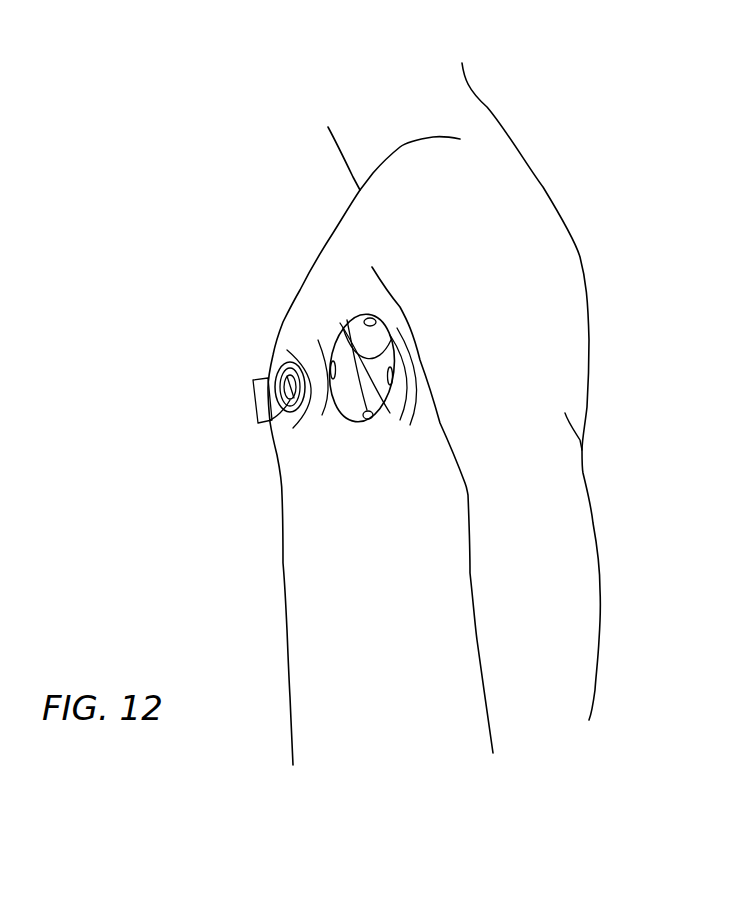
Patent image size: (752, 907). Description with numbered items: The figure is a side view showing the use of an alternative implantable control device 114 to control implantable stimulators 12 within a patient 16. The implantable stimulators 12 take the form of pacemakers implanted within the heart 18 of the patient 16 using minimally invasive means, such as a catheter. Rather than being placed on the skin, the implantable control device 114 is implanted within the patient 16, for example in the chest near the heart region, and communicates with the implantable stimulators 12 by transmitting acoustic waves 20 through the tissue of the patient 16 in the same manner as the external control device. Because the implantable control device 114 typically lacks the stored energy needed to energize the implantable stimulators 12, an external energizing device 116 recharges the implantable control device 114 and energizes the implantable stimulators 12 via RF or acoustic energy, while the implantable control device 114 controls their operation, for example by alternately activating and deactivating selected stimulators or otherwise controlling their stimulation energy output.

The implantable stimulator 12 is at (366, 423).
The patient 16 is at (293, 528).
The heart 18 is at (353, 315).
The acoustic waves 20 is at (302, 344).
The implantable control device 114 is at (297, 420).
The external energizing device 116 is at (253, 402).